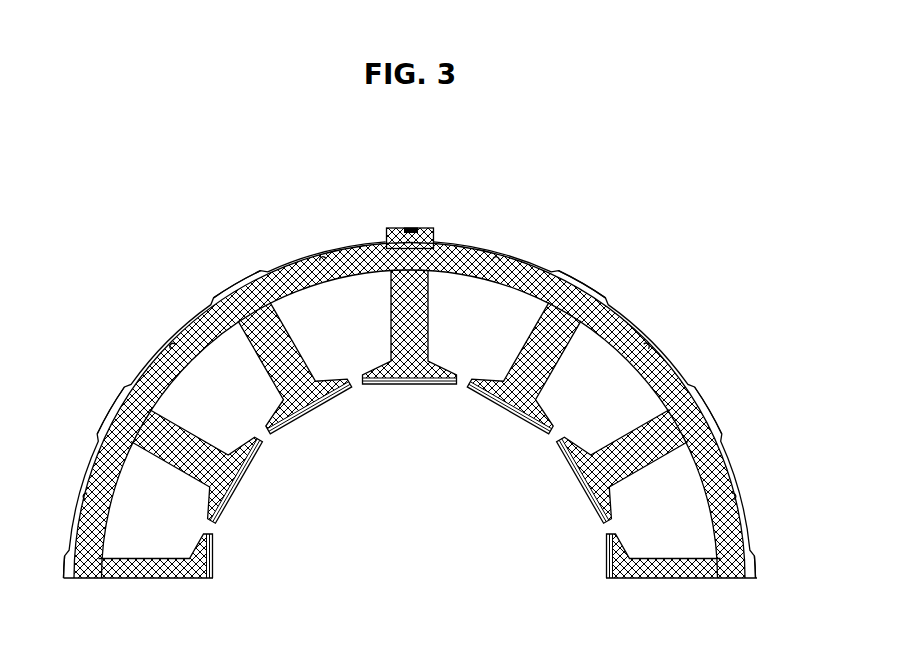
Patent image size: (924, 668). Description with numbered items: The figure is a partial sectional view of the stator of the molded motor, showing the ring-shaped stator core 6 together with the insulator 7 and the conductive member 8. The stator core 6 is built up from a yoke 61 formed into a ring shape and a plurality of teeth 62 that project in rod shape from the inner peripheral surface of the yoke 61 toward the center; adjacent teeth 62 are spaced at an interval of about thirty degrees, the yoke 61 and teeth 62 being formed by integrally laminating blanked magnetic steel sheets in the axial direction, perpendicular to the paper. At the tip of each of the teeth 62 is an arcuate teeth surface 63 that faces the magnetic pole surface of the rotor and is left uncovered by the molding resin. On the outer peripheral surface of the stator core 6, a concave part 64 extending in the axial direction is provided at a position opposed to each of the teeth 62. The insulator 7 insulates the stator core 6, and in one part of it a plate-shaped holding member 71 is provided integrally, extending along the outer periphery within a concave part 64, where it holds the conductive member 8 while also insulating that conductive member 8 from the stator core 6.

The stator core 6 is at (552, 253).
The insulator 7 is at (508, 261).
The conductive member 8 is at (412, 229).
The yoke 61 is at (652, 329).
The teeth 62 is at (430, 303).
The teeth surface 63 is at (468, 388).
The concave part 64 is at (395, 229).
The holding member 71 is at (425, 226).